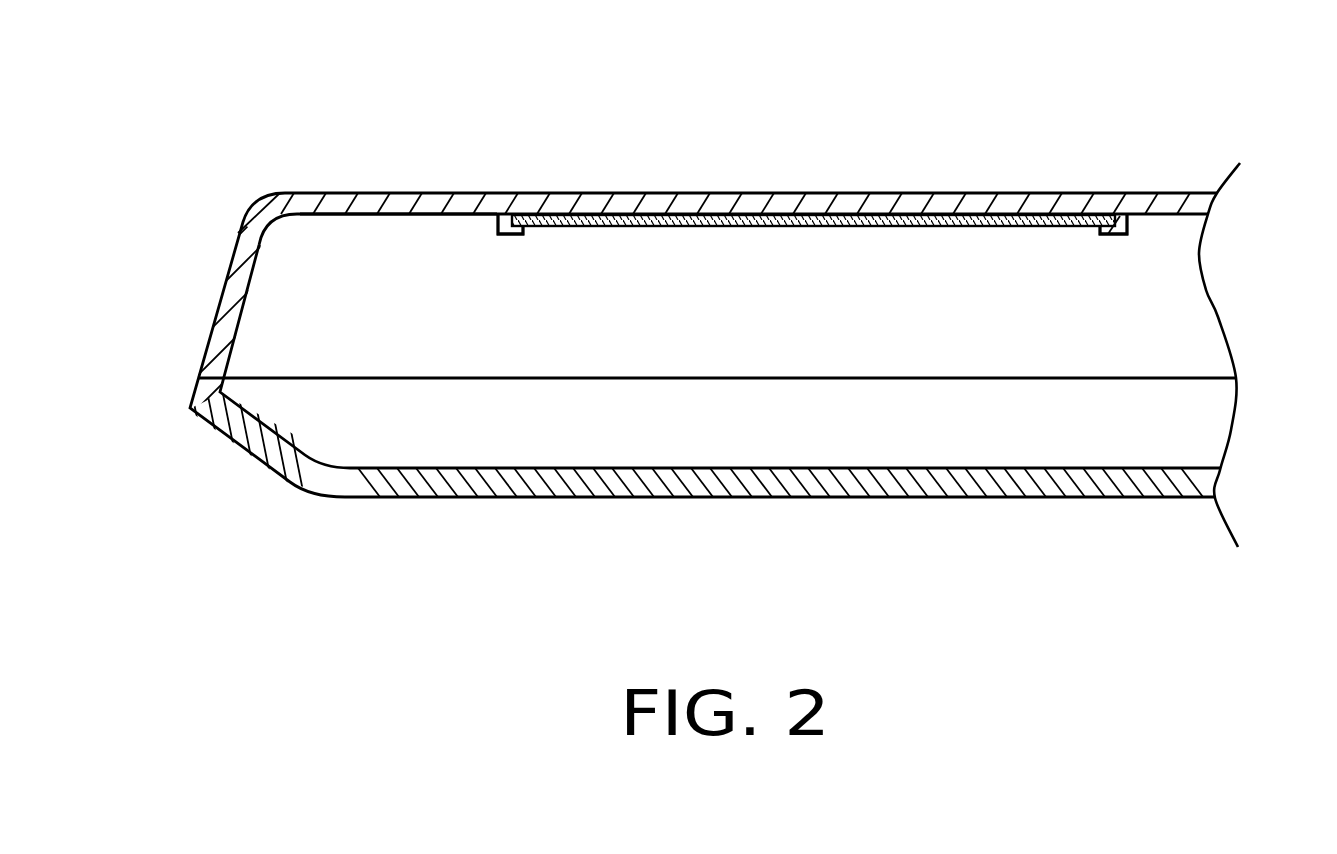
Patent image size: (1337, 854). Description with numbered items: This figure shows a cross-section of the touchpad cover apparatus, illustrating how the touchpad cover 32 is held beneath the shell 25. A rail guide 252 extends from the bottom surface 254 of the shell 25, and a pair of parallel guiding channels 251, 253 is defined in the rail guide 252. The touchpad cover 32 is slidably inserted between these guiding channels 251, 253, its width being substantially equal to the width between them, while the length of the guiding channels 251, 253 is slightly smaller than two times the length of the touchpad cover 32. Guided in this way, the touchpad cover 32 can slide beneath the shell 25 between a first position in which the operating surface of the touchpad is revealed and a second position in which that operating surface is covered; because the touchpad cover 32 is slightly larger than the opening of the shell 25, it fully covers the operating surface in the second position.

The shell 25 is at (325, 205).
The guiding channel 251 is at (535, 215).
The rail guide 252 is at (812, 136).
The guiding channel 253 is at (1088, 178).
The bottom surface 254 is at (398, 232).
The touchpad cover 32 is at (1008, 228).